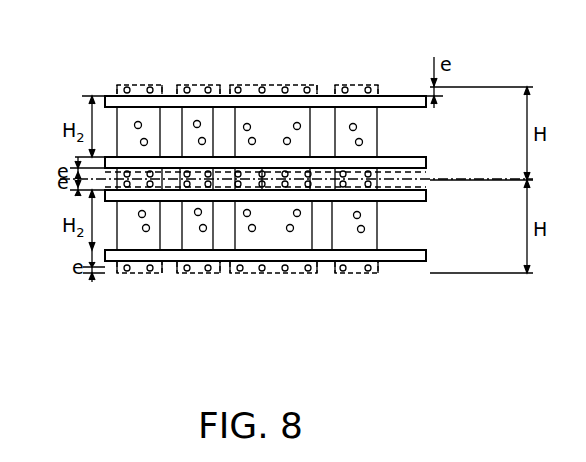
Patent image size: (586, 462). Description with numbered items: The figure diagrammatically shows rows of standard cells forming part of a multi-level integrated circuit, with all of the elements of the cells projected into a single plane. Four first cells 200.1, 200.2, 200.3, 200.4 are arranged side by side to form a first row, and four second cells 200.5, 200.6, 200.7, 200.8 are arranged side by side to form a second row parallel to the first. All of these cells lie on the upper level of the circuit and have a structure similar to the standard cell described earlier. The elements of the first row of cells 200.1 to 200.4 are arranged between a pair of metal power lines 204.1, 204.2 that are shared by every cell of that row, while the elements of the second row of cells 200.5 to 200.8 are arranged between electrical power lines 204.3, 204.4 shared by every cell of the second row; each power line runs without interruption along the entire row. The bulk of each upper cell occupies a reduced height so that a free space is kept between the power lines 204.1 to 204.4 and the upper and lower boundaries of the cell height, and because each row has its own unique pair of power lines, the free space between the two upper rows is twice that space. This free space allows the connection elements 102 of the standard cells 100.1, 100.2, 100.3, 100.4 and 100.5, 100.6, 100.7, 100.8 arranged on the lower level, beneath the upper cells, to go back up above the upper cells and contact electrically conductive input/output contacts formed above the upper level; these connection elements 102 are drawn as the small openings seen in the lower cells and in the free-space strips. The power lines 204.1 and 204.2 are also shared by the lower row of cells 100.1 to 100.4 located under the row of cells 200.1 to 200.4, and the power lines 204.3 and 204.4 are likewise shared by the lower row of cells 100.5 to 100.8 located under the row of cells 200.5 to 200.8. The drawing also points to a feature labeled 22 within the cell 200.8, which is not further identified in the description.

The holes 22 is at (362, 217).
The connection elements 102 is at (125, 88).
The standard cell 100.1 is at (87, 64).
The standard cell 100.2 is at (188, 88).
The standard cell 100.3 is at (273, 88).
The standard cell 100.4 is at (348, 88).
The standard cell 100.5 is at (140, 272).
The standard cell 100.6 is at (207, 273).
The standard cell 100.7 is at (302, 273).
The standard cell 100.8 is at (378, 269).
The first cell 200.1 is at (139, 118).
The first cell 200.2 is at (198, 118).
The first cell 200.3 is at (292, 117).
The first cell 200.4 is at (353, 117).
The second cell 200.5 is at (132, 243).
The second cell 200.6 is at (197, 243).
The second cell 200.7 is at (283, 243).
The second cell 200.8 is at (387, 256).
The metal power line 204.1 is at (420, 100).
The metal power line 204.2 is at (420, 165).
The electrical power line 204.3 is at (420, 197).
The electrical power line 204.4 is at (420, 258).